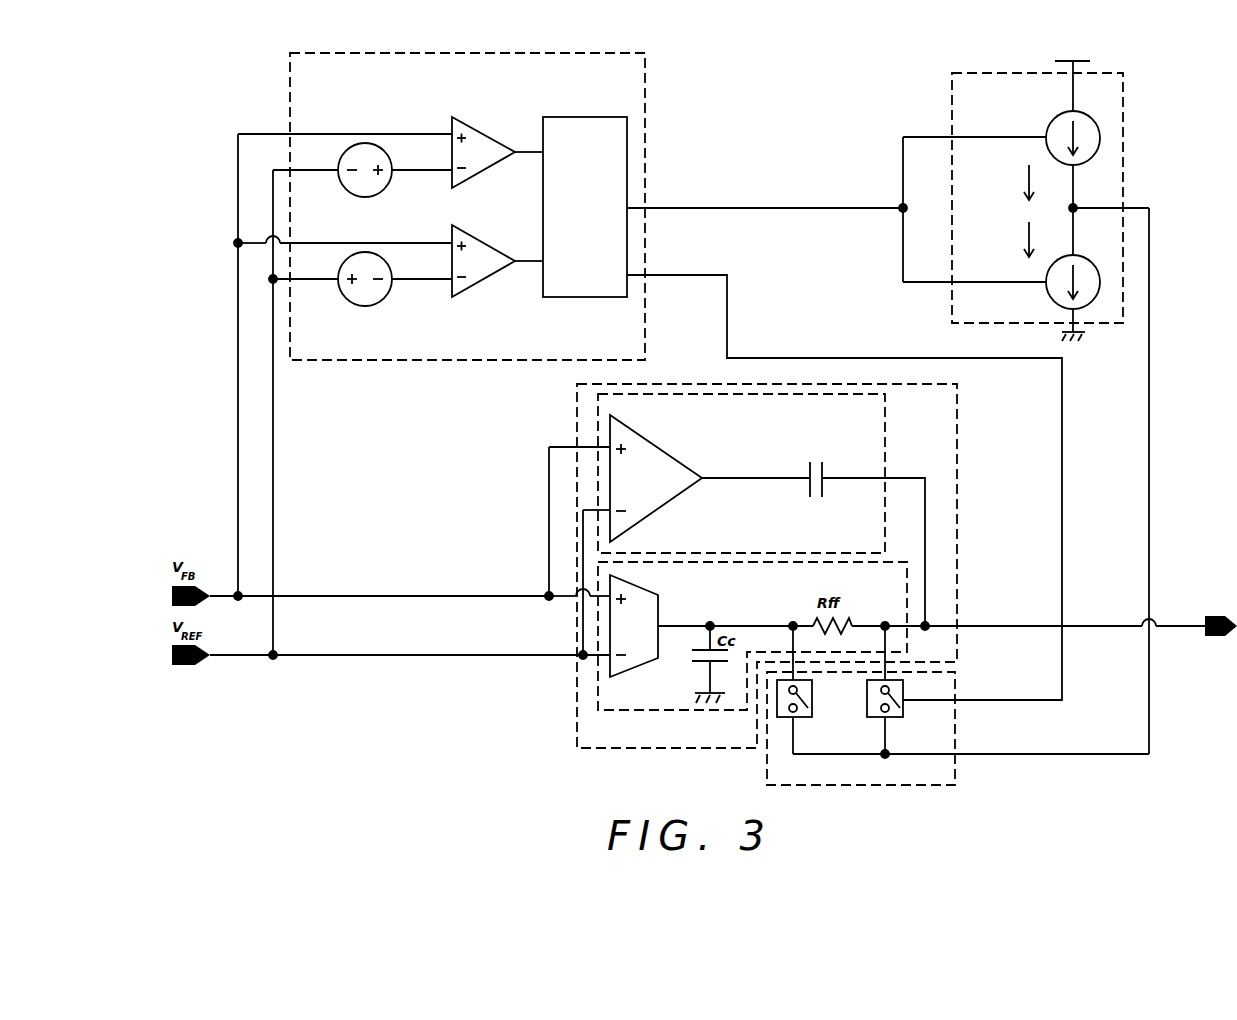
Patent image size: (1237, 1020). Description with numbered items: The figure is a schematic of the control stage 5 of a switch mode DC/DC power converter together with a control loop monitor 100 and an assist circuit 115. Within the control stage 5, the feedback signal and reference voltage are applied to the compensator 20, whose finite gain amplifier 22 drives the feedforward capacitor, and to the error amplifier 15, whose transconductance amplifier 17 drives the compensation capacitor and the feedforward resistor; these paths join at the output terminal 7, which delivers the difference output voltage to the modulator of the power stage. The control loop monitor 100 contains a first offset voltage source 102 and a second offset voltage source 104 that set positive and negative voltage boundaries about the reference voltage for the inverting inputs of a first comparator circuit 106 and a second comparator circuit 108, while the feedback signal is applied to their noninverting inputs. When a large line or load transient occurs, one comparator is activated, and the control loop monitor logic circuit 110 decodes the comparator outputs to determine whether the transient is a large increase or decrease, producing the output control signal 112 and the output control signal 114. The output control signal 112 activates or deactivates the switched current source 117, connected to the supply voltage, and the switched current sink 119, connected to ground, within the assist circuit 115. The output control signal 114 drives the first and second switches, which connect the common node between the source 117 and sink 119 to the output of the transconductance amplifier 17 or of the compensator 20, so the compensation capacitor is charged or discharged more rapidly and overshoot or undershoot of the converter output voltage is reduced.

The control stage 5 is at (576, 683).
The output terminal 7 is at (1168, 626).
The error amplifier 15 is at (908, 566).
The transconductance amplifier 17 is at (623, 673).
The compensator 20 is at (885, 438).
The finite gain amplifier 22 is at (650, 442).
The control loop monitor 100 is at (352, 362).
The first offset voltage source 102 is at (362, 197).
The second offset voltage source 104 is at (362, 306).
The first comparator circuit 106 is at (493, 170).
The second comparator circuit 108 is at (493, 279).
The control loop monitor logic circuit 110 is at (543, 290).
The output control signal 112 is at (741, 206).
The output control signal 114 is at (667, 275).
The assist circuit 115 is at (972, 416).
The switched current source 117 is at (1097, 157).
The switched current sink 119 is at (1050, 291).